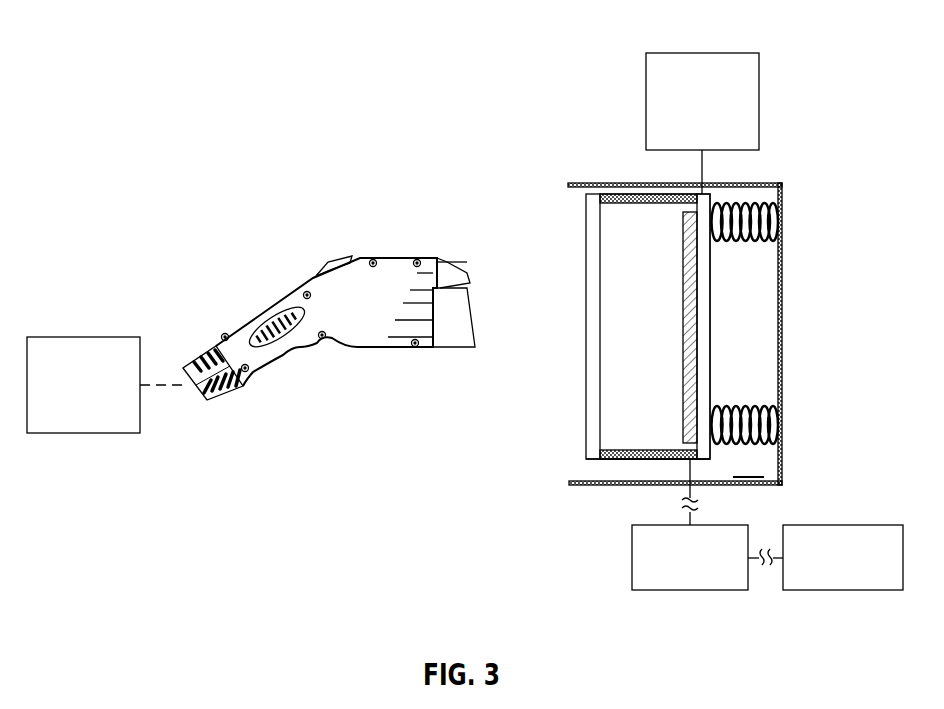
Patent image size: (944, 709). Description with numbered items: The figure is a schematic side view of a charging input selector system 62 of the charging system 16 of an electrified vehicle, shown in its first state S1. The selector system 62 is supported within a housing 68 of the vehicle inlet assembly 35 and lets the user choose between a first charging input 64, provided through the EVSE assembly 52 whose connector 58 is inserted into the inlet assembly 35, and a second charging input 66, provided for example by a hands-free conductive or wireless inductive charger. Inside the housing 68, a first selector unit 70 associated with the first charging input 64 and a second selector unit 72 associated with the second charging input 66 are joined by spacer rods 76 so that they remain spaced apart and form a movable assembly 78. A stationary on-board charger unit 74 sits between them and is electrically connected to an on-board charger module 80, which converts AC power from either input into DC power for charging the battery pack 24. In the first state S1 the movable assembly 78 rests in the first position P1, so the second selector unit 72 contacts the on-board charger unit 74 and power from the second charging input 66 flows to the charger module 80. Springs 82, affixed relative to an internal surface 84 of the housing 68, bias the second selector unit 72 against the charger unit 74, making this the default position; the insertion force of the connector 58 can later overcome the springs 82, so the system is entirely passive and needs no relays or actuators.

The charging system 16 is at (741, 37).
The battery pack 24 is at (843, 590).
The vehicle inlet assembly 35 is at (562, 190).
The EVSE assembly 52 is at (329, 297).
The connector 58 is at (397, 345).
The charging input selector system 62 is at (632, 186).
The first charging input 64 is at (92, 337).
The second charging input 66 is at (698, 53).
The housing 68 is at (580, 183).
The first selector unit 70 is at (586, 355).
The second selector unit 72 is at (710, 348).
The on-board charger unit 74 is at (683, 360).
The spacer rods 76 is at (638, 201).
The movable assembly 78 is at (604, 472).
The on-board charger module 80 is at (690, 590).
The springs 82 is at (760, 243).
The internal surface 84 is at (782, 310).
The first state S1 is at (388, 120).
The first position P1 is at (748, 463).